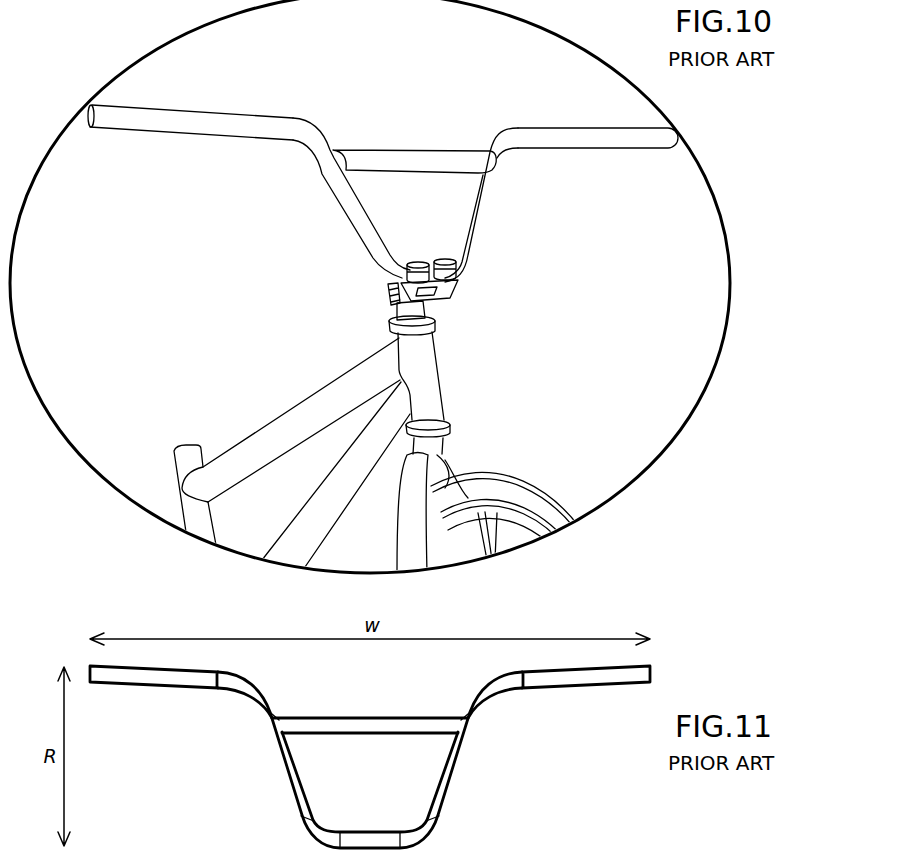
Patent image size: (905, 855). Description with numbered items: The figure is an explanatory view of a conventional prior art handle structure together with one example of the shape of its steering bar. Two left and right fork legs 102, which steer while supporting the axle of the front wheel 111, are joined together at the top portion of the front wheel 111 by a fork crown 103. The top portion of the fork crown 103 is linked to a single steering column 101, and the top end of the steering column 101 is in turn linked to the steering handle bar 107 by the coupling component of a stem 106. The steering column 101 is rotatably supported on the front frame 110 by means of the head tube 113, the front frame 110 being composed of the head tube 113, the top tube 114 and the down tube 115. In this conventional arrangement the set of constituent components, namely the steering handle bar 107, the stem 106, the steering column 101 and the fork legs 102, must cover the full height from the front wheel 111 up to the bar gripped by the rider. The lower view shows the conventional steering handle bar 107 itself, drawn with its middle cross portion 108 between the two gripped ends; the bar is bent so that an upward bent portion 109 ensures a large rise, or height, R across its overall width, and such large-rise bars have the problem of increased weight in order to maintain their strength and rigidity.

In FIG. 10, the steering column 101 is at (433, 310).
In FIG. 10, the fork legs 102 is at (412, 510).
In FIG. 10, the fork crown 103 is at (440, 447).
In FIG. 10, the stem 106 is at (392, 300).
In FIG. 10, the steering handle bar 107 is at (190, 125).
In FIG. 11, the steering handle bar 107 is at (165, 678).
In FIG. 10, the handlebar crossbar 108 is at (405, 157).
In FIG. 11, the handlebar crossbar 108 is at (366, 717).
In FIG. 10, the upward bent portion 109 is at (490, 224).
In FIG. 11, the upward bent portion 109 is at (370, 760).
In FIG. 10, the front frame 110 is at (235, 298).
In FIG. 10, the front wheel 111 is at (527, 483).
In FIG. 10, the head tube 113 is at (418, 348).
In FIG. 10, the top tube 114 is at (355, 390).
In FIG. 10, the down tube 115 is at (375, 433).